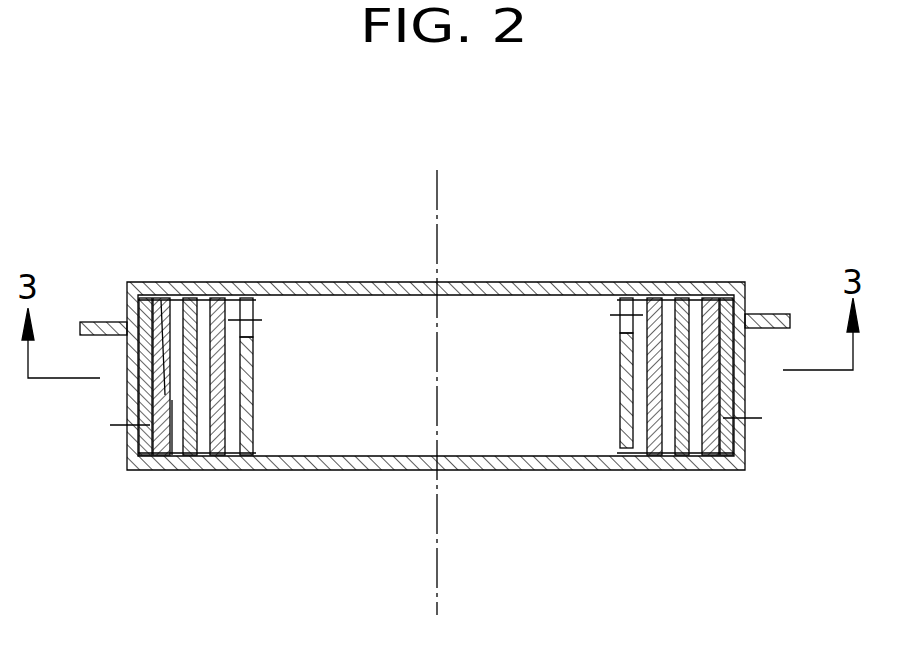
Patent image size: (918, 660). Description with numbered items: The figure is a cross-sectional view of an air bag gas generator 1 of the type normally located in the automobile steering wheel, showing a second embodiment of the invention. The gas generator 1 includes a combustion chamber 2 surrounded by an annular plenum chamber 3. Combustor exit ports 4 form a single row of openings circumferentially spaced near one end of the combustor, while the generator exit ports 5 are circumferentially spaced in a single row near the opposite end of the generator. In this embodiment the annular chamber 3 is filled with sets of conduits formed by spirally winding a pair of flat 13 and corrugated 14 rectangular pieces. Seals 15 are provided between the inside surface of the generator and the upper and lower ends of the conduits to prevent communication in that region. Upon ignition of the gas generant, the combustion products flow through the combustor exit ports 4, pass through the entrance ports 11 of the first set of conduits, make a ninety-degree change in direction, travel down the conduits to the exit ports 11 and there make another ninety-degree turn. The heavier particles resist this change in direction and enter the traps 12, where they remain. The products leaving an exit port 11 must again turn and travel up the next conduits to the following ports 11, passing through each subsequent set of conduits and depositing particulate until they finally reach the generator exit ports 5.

The gas generator 1 is at (497, 280).
The combustion chamber 2 is at (573, 318).
The annular plenum chamber 3 is at (668, 350).
The combustor exit ports 4 is at (253, 293).
The generator exit ports 5 is at (127, 425).
The entrance and exit ports of the conduits 11 is at (165, 300).
The traps 12 is at (198, 300).
The flat rectangular piece 13 is at (136, 292).
The corrugated rectangular piece 14 is at (172, 458).
The seals 15 is at (683, 292).